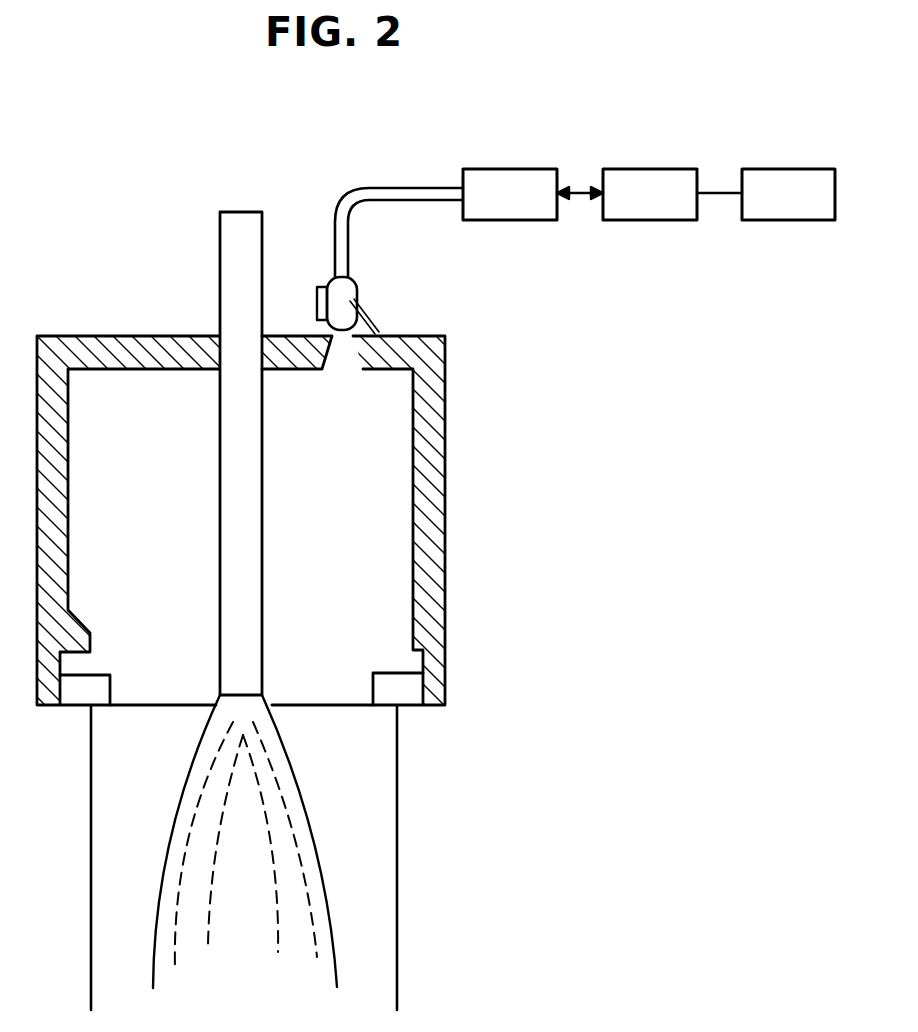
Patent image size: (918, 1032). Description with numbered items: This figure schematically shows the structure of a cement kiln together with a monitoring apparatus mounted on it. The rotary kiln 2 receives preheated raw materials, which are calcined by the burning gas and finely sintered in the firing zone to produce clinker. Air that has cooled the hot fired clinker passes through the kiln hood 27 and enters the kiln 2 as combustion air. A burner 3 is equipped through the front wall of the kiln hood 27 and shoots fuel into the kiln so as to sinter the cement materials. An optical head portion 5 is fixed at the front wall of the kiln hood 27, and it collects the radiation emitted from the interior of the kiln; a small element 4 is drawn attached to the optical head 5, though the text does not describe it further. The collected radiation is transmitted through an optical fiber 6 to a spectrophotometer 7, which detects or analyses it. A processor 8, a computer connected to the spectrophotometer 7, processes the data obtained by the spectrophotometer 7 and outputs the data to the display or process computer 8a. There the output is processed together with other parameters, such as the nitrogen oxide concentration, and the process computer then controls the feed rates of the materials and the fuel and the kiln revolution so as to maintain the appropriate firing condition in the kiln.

The kiln 2 is at (135, 803).
The burner 3 is at (235, 287).
The optical sensor 4 is at (317, 297).
The optical head portion 5 is at (348, 287).
The optical fiber 6 is at (413, 193).
The spectrophotometer 7 is at (537, 172).
The processor 8 is at (663, 175).
The display or process computer 8a is at (787, 177).
The kiln hood 27 is at (122, 350).